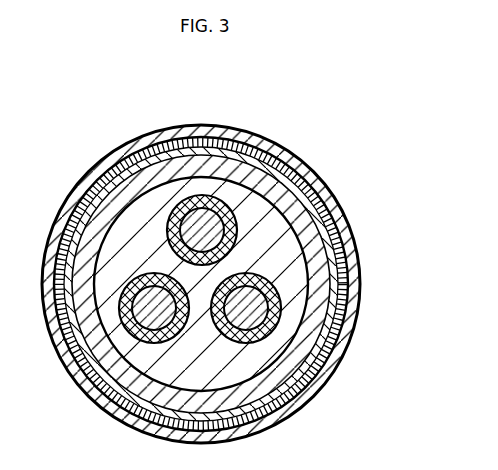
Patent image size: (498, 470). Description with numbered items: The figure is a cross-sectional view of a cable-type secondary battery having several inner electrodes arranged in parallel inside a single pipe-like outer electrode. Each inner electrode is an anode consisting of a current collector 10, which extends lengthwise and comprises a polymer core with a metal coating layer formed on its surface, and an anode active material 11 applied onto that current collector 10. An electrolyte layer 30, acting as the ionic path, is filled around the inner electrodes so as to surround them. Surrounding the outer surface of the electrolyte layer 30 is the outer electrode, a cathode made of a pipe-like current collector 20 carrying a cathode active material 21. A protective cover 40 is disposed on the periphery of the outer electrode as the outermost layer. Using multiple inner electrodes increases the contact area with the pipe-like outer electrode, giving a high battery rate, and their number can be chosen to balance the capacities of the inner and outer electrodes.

The current collector of inner electrode 10 is at (197, 214).
The active material of inner electrode 11 is at (216, 202).
The current collector of outer electrode 20 is at (317, 217).
The active material of outer electrode 21 is at (308, 193).
The electrolyte layer 30 is at (272, 190).
The protective cover 40 is at (348, 238).